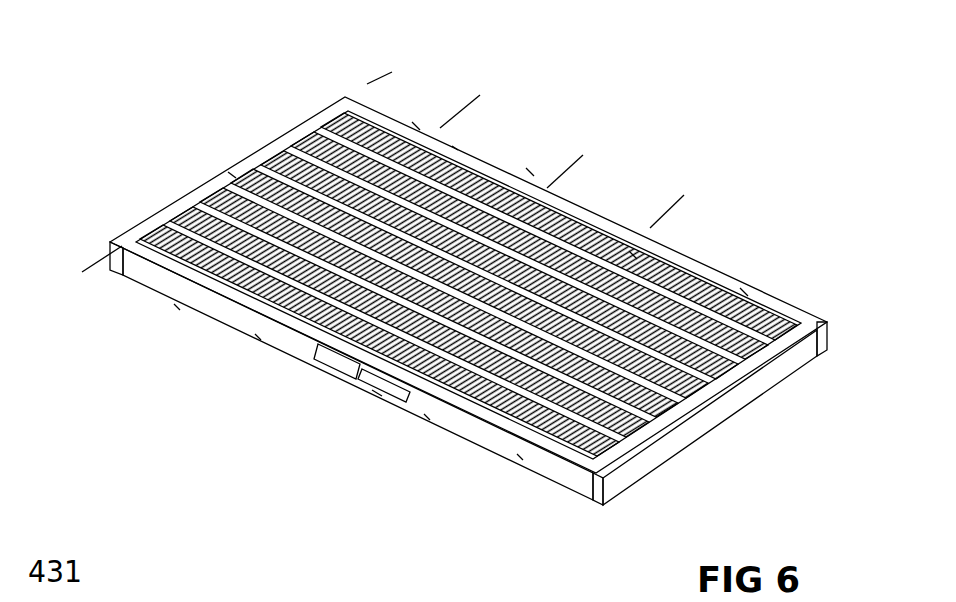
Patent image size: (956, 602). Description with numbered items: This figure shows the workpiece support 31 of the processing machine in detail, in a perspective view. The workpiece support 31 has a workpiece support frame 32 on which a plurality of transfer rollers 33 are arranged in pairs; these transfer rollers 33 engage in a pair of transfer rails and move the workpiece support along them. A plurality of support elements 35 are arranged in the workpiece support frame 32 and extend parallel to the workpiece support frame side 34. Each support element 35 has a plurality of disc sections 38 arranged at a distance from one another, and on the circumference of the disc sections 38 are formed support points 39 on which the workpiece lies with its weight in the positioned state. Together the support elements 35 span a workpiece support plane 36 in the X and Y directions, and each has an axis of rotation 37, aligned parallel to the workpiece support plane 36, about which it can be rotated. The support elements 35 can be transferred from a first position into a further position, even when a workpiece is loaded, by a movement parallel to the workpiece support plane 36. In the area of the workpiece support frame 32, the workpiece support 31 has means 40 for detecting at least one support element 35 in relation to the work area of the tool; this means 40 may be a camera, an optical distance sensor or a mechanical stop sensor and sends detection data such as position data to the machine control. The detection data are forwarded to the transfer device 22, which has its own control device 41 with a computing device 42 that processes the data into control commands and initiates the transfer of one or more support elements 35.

The transfer device 22 is at (270, 404).
The workpiece support 31 is at (126, 62).
The workpiece support frame 32 is at (577, 493).
The transfer rollers 33 is at (455, 148).
The workpiece support frame side 34 is at (770, 375).
The support elements 35 is at (416, 125).
The workpiece support plane 36 is at (230, 175).
The axis of rotation 37 is at (82, 268).
The disc sections 38 is at (273, 133).
The support points 39 is at (293, 123).
The means for detecting 40 is at (337, 373).
The control device 41 is at (380, 393).
The computing device 42 is at (377, 397).